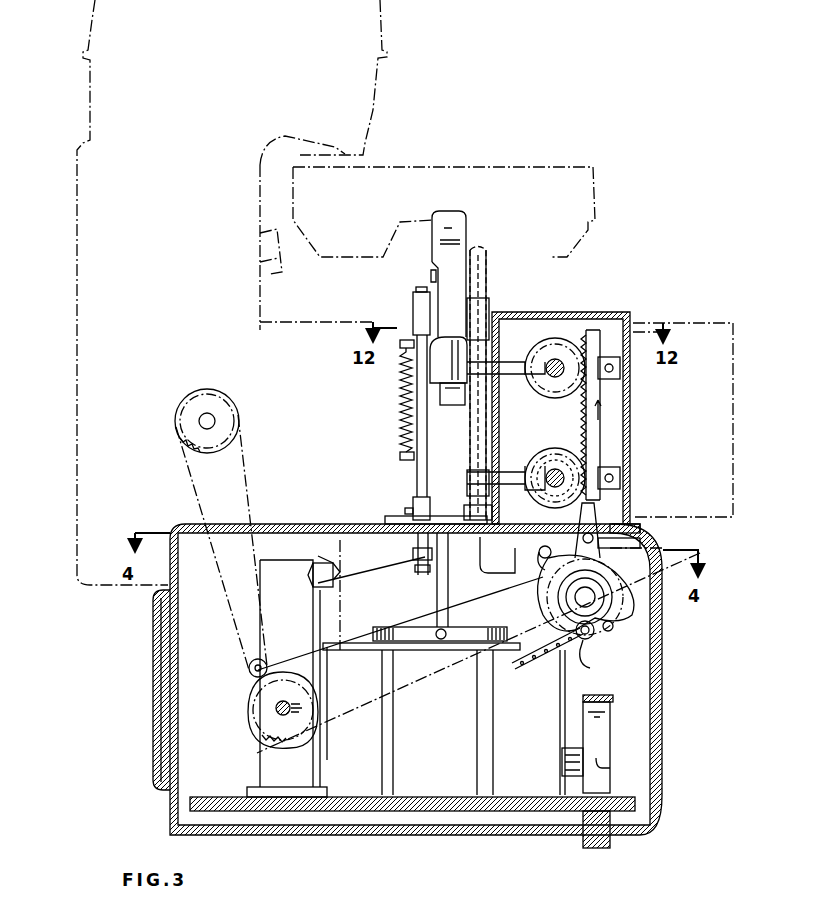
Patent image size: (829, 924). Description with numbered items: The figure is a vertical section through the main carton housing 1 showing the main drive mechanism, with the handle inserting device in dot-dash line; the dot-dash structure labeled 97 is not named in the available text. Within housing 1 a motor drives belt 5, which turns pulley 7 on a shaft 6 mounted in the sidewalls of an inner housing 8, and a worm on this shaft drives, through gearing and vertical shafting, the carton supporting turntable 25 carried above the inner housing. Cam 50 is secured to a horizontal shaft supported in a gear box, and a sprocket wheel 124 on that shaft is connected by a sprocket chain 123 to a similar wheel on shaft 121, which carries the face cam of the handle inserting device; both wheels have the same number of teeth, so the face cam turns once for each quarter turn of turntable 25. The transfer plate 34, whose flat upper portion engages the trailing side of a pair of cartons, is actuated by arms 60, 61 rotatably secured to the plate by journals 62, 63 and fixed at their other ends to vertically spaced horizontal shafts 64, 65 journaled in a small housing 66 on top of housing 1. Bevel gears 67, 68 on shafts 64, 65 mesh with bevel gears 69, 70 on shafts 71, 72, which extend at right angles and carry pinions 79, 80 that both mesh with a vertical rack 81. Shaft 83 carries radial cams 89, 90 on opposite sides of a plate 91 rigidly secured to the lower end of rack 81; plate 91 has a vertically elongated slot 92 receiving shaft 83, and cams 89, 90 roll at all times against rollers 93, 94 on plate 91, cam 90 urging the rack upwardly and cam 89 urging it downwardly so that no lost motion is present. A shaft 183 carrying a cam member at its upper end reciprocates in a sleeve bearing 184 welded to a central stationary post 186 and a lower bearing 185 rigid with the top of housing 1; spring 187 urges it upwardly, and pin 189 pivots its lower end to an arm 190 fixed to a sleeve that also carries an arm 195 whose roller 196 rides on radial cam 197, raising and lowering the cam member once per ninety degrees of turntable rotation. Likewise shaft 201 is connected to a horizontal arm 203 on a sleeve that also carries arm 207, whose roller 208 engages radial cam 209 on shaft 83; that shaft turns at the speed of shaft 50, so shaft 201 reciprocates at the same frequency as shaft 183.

The housing 1 is at (665, 790).
The belt 5 is at (606, 697).
The shaft 6 is at (572, 748).
The pulley 7 is at (612, 768).
The inner housing 8 is at (561, 680).
The carton supporting turntable 25 is at (597, 193).
The transfer plate 34 is at (466, 232).
The cam 50 is at (276, 708).
The arm 60 is at (490, 318).
The arm 61 is at (472, 440).
The journal 62 is at (430, 275).
The journal 63 is at (450, 405).
The shaft 64 is at (520, 360).
The shaft 65 is at (535, 460).
The housing 66 is at (632, 405).
The bevel gear 67 is at (606, 357).
The bevel gear 68 is at (606, 467).
The bevel gear 69 is at (556, 348).
The bevel gear 70 is at (544, 455).
The shaft 71 is at (548, 385).
The shaft 72 is at (535, 492).
The pinion 79 is at (562, 380).
The pinion 80 is at (575, 462).
The rack 81 is at (601, 448).
The shaft 83 is at (600, 600).
The radial cam 89 is at (592, 636).
The radial cam 90 is at (614, 626).
The plate 91 is at (598, 522).
The slot 92 is at (642, 548).
The roller 93 is at (590, 668).
The roller 94 is at (640, 524).
The machine body outline 97 is at (378, 118).
The shaft 121 is at (216, 421).
The sprocket chain 123 is at (262, 500).
The sprocket wheel 124 is at (275, 727).
The shaft 183 is at (414, 447).
The sleeve bearing 184 is at (418, 306).
The bearing 185 is at (413, 503).
The central stationary post 186 is at (445, 365).
The spring 187 is at (404, 400).
The pin 189 is at (417, 575).
The arm 190 is at (370, 565).
The arm 195 is at (320, 588).
The roller 196 is at (248, 669).
The radial cam 197 is at (252, 730).
The shaft 201 is at (487, 262).
The arm 203 is at (495, 560).
The arm 207 is at (543, 580).
The roller 208 is at (548, 612).
The radial cam 209 is at (688, 565).